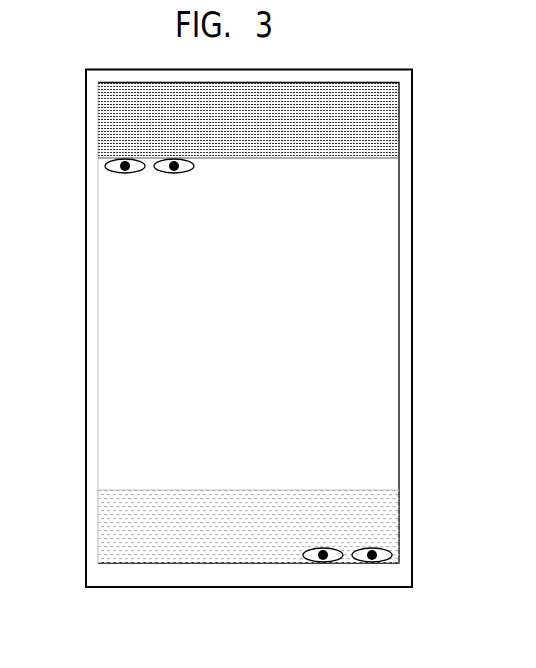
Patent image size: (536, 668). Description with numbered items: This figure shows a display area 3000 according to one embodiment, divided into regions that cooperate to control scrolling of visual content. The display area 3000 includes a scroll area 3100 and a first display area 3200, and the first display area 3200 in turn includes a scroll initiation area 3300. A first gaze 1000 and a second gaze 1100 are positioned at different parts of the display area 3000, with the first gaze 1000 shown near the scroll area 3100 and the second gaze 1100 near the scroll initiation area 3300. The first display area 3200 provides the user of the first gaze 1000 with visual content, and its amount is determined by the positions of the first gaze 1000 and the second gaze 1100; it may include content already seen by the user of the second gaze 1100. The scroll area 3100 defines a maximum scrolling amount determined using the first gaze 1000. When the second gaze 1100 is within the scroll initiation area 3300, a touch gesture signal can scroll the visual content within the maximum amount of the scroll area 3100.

The display area 3000 is at (399, 101).
The scroll area 3100 is at (93, 83).
The first display area 3200 is at (90, 162).
The scroll initiation area 3300 is at (403, 490).
The first gaze 1000 is at (122, 174).
The second gaze 1100 is at (357, 563).